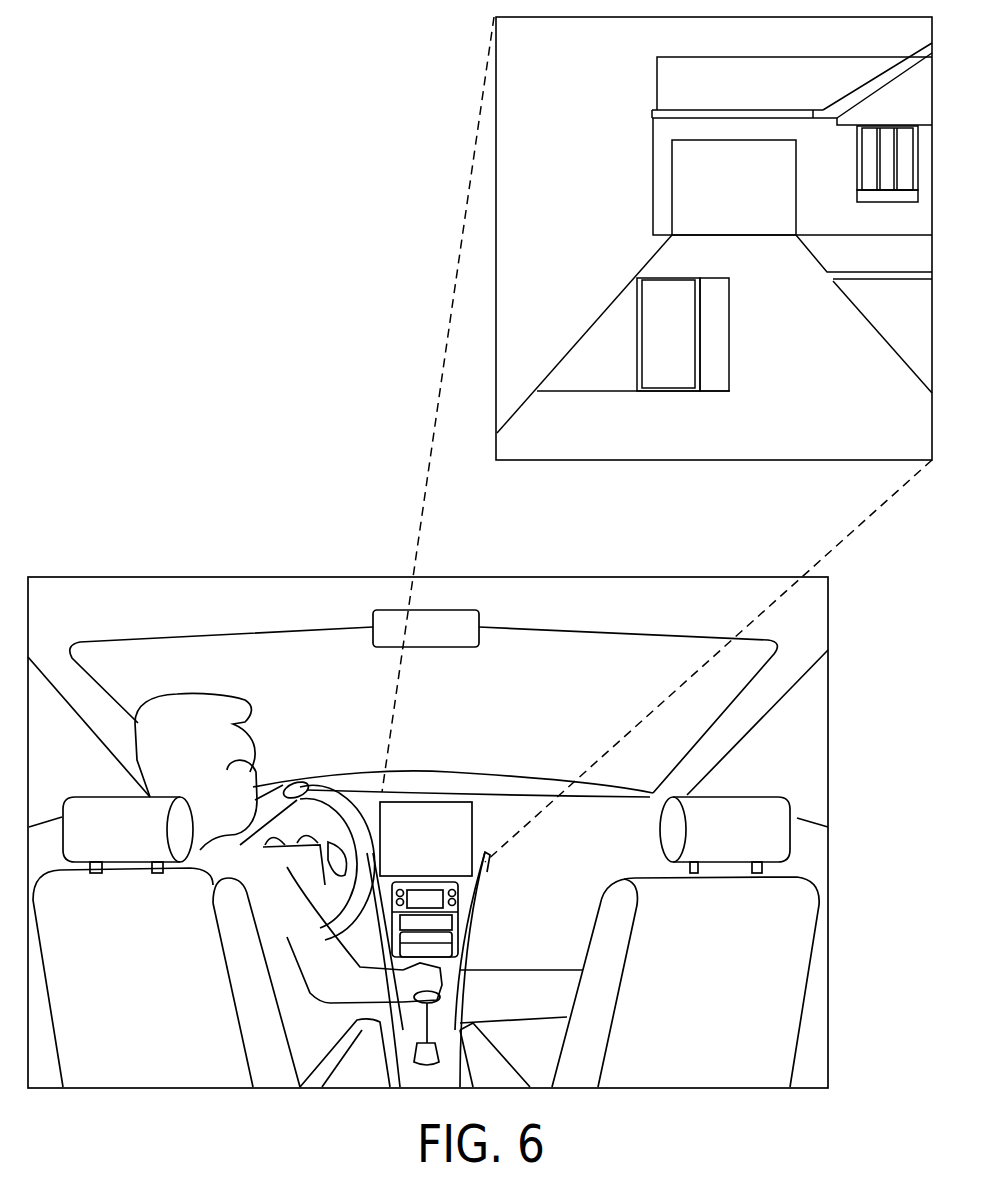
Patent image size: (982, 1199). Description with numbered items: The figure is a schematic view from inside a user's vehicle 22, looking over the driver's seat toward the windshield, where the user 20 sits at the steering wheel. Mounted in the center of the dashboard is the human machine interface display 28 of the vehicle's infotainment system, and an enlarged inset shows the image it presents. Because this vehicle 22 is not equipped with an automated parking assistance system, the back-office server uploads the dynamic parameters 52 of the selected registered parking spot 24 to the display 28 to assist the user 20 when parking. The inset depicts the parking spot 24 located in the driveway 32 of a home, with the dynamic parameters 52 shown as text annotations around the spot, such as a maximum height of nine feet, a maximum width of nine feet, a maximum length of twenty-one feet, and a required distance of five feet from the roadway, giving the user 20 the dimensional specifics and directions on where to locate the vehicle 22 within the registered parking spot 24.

The user 20 is at (252, 893).
The vehicle 22 is at (580, 836).
The parking spot 24 is at (655, 347).
The human machine interface display 28 is at (414, 851).
The driveway 32 is at (689, 437).
The dynamic parameters 52 is at (690, 190).